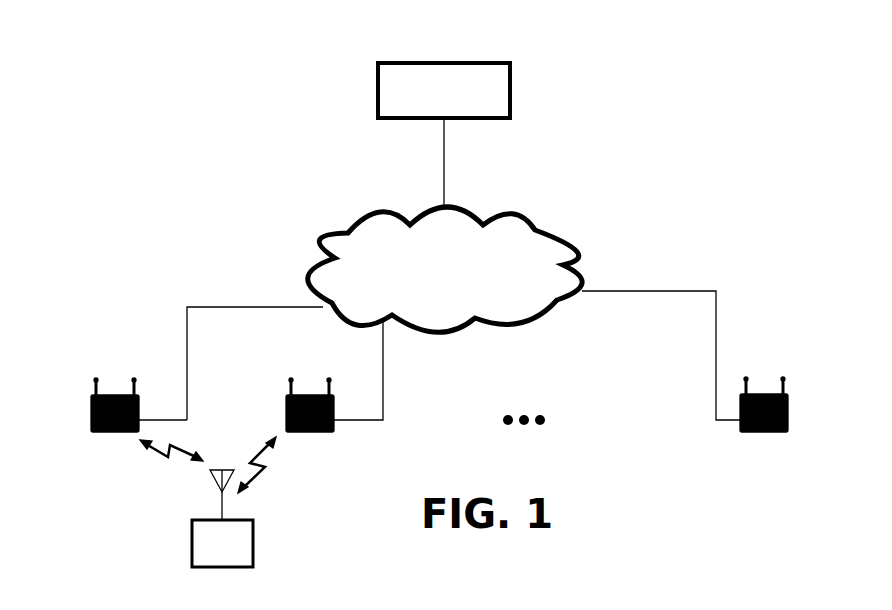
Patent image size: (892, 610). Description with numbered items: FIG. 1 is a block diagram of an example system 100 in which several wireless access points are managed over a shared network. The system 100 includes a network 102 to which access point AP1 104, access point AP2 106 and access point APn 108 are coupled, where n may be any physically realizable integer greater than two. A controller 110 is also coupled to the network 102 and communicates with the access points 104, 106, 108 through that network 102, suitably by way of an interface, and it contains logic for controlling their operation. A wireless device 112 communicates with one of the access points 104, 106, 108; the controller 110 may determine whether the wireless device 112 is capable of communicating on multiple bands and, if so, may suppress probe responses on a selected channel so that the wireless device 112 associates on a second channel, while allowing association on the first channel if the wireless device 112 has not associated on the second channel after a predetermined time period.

The system 100 is at (361, 30).
The network 102 is at (530, 218).
The access point AP1 104 is at (91, 416).
The access point AP2 106 is at (286, 416).
The access point APn 108 is at (788, 423).
The controller 110 is at (510, 90).
The wireless device 112 is at (253, 538).